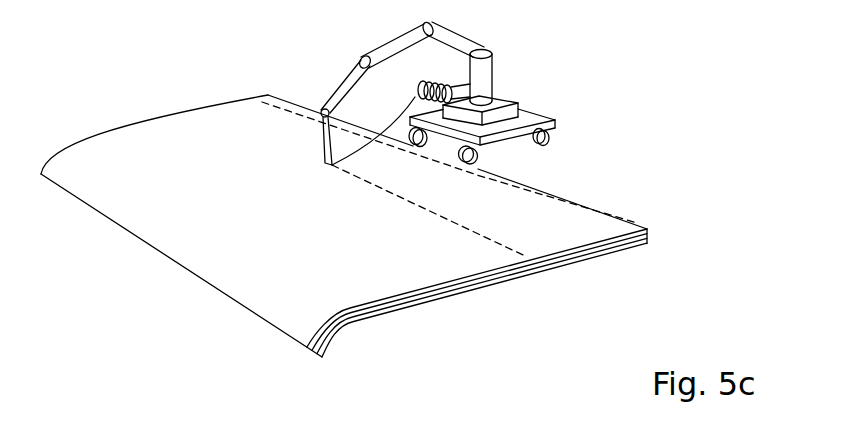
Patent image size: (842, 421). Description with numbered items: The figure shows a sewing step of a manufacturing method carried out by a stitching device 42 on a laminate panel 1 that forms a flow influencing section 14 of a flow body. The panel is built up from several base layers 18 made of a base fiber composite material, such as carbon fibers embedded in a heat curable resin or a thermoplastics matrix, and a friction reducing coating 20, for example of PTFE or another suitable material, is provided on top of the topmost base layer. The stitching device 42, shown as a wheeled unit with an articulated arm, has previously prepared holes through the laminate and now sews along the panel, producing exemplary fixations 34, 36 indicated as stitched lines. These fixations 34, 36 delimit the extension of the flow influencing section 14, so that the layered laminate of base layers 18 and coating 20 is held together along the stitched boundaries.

The composite panel workpiece 1 is at (208, 184).
The flow influencing section 14 is at (537, 238).
The base layers 18 is at (377, 315).
The friction reducing coating 20 is at (650, 240).
The fixation 34 is at (565, 206).
The fixation 36 is at (427, 210).
The stitching device 42 is at (527, 112).